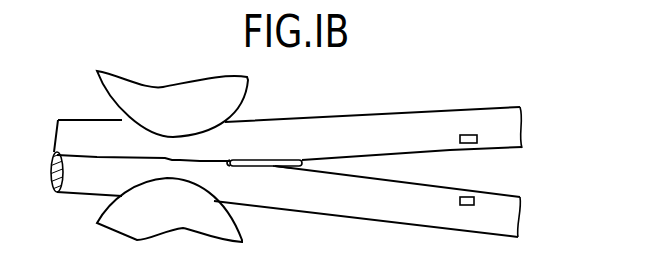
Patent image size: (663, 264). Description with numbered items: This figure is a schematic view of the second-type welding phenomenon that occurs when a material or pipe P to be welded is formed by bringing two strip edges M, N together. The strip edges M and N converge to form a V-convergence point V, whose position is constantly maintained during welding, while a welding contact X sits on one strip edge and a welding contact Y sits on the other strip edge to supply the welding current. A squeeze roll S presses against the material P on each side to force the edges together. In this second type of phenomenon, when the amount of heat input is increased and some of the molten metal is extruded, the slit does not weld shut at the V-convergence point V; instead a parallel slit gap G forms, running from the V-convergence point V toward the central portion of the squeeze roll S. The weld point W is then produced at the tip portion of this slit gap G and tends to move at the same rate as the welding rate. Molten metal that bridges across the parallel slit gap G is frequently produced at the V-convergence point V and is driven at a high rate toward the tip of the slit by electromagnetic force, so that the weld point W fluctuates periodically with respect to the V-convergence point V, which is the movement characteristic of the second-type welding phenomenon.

The squeeze roll S is at (172, 156).
The material or pipe to be welded P is at (100, 182).
The strip edge M is at (507, 148).
The strip edge N is at (508, 194).
The V-convergence point V is at (302, 161).
The weld point W is at (226, 164).
The gap G is at (272, 167).
The welding contact X is at (471, 135).
The welding contact Y is at (470, 197).